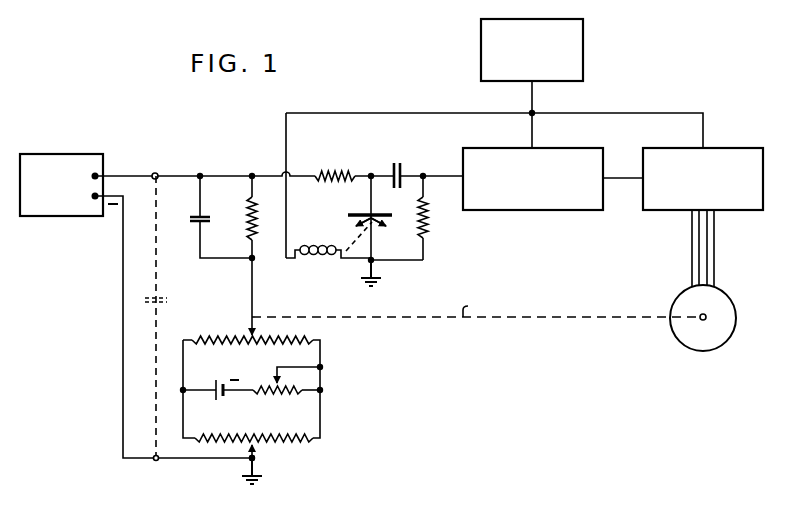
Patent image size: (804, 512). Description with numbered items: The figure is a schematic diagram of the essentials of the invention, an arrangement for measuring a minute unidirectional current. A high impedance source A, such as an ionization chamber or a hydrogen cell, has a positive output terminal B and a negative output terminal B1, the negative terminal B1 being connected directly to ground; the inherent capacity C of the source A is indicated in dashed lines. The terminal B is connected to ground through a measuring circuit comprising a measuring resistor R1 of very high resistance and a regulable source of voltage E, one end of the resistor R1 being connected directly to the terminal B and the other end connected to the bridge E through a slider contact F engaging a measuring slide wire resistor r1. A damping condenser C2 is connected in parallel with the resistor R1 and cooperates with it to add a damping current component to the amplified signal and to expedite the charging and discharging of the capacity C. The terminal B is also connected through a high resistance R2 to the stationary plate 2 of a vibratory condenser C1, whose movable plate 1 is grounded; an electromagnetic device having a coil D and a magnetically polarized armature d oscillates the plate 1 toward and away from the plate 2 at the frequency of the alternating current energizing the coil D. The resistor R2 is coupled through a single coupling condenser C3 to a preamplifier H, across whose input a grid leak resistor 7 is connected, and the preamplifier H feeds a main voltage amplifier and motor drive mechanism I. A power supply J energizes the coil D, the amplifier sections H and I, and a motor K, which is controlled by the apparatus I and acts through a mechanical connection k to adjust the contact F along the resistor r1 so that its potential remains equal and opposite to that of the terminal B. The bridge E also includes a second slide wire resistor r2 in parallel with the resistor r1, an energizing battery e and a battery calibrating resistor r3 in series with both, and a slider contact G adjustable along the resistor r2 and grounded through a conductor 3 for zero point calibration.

The high impedance source of minute unidirectional current A is at (69, 185).
The positive output terminal B is at (146, 176).
The negative output terminal B1 is at (123, 303).
The inherent capacity of the current source C is at (168, 300).
The vibratory condenser C1 is at (389, 222).
The damping condenser C2 is at (189, 219).
The coupling condenser C3 is at (400, 162).
The measuring resistor R1 is at (247, 216).
The resistor of high resistance R2 is at (338, 170).
The movable plate 1 is at (376, 227).
The stationary plate 2 is at (383, 213).
The grid leak resistor 7 is at (430, 219).
The coil D is at (317, 243).
The armature d is at (328, 254).
The preamplifier apparatus H is at (466, 148).
The main voltage amplifier and motor drive mechanism I is at (656, 148).
The power supply device J is at (481, 37).
The motor K is at (679, 294).
The mechanical connection k is at (476, 303).
The regulable source of voltage E is at (321, 350).
The slider contact F is at (248, 333).
The measuring slide wire resistor r1 is at (239, 347).
The second slide wire resistor r2 is at (242, 430).
The battery calibrating resistor r3 is at (284, 397).
The energizing battery e is at (220, 398).
The slider contact G is at (255, 452).
The conductor 3 is at (249, 455).